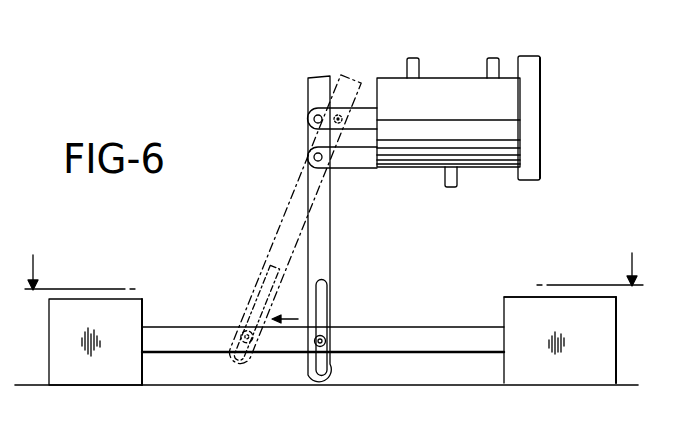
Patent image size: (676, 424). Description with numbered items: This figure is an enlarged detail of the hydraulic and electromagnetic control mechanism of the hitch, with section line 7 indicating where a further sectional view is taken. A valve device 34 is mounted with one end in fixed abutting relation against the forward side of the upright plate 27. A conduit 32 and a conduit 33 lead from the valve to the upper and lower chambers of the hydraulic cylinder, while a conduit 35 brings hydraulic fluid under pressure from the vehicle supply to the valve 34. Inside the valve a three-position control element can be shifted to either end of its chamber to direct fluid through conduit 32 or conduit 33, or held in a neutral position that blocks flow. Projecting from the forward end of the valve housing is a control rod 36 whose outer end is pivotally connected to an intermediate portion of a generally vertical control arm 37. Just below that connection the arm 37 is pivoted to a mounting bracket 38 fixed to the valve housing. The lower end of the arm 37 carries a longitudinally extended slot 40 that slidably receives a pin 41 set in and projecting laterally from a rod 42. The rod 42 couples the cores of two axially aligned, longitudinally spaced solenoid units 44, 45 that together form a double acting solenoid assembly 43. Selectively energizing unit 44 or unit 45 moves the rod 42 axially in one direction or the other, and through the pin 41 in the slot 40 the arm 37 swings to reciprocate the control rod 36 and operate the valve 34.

The section line 7- 7 is at (337, 256).
The plate 27 is at (533, 96).
The conduit 32 is at (496, 62).
The conduit 33 is at (415, 61).
The valve device 34 is at (467, 114).
The conduit 35 is at (450, 189).
The control rod 36 is at (369, 107).
The control arm 37 is at (280, 235).
The mounting bracket 38 is at (363, 168).
The slot 40 is at (262, 288).
The pin 41 is at (312, 350).
The rod 42 is at (414, 327).
The double acting solenoid assembly 43 is at (507, 277).
The solenoid unit 44 is at (128, 370).
The solenoid unit 45 is at (596, 372).